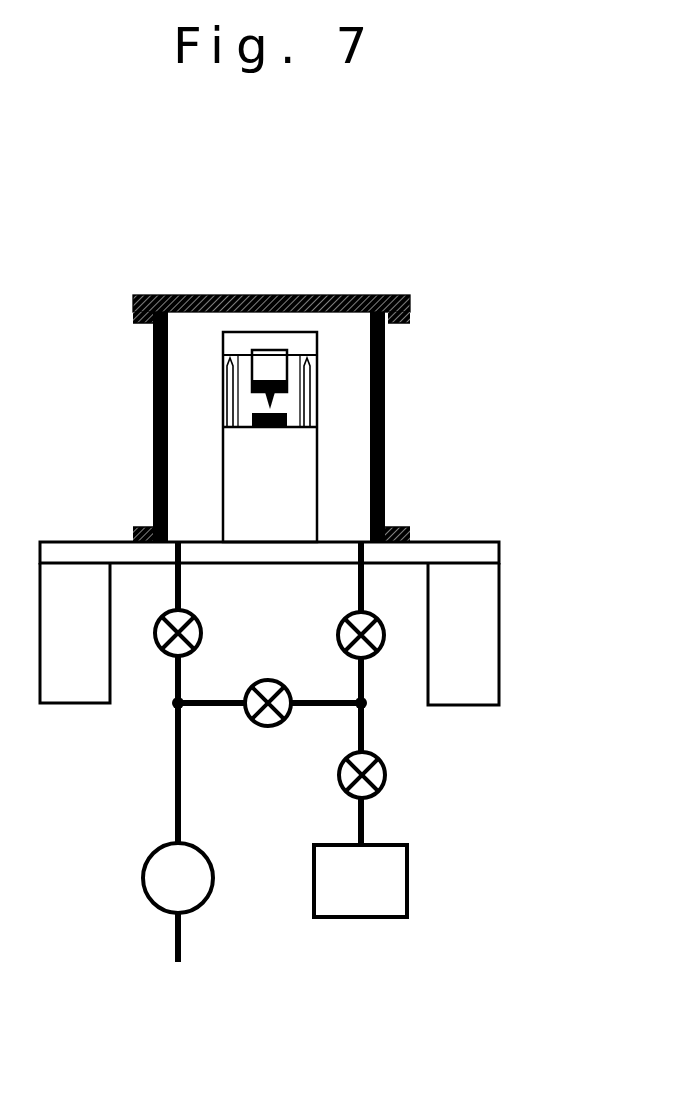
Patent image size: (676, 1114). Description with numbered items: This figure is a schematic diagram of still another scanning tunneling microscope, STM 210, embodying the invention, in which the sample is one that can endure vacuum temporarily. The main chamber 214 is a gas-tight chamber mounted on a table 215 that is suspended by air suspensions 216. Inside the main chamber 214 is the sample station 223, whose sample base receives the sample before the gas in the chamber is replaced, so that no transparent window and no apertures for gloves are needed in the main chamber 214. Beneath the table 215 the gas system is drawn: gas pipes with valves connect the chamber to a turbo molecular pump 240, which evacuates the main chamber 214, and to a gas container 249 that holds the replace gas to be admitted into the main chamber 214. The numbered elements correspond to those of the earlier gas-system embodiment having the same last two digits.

The STM 210 is at (279, 250).
The main chamber 214 is at (353, 367).
The table 215 is at (488, 562).
The air suspensions 216 is at (488, 617).
The sample station 223 is at (293, 450).
The turbo molecular pump 240 is at (144, 878).
The gas container 249 is at (392, 882).